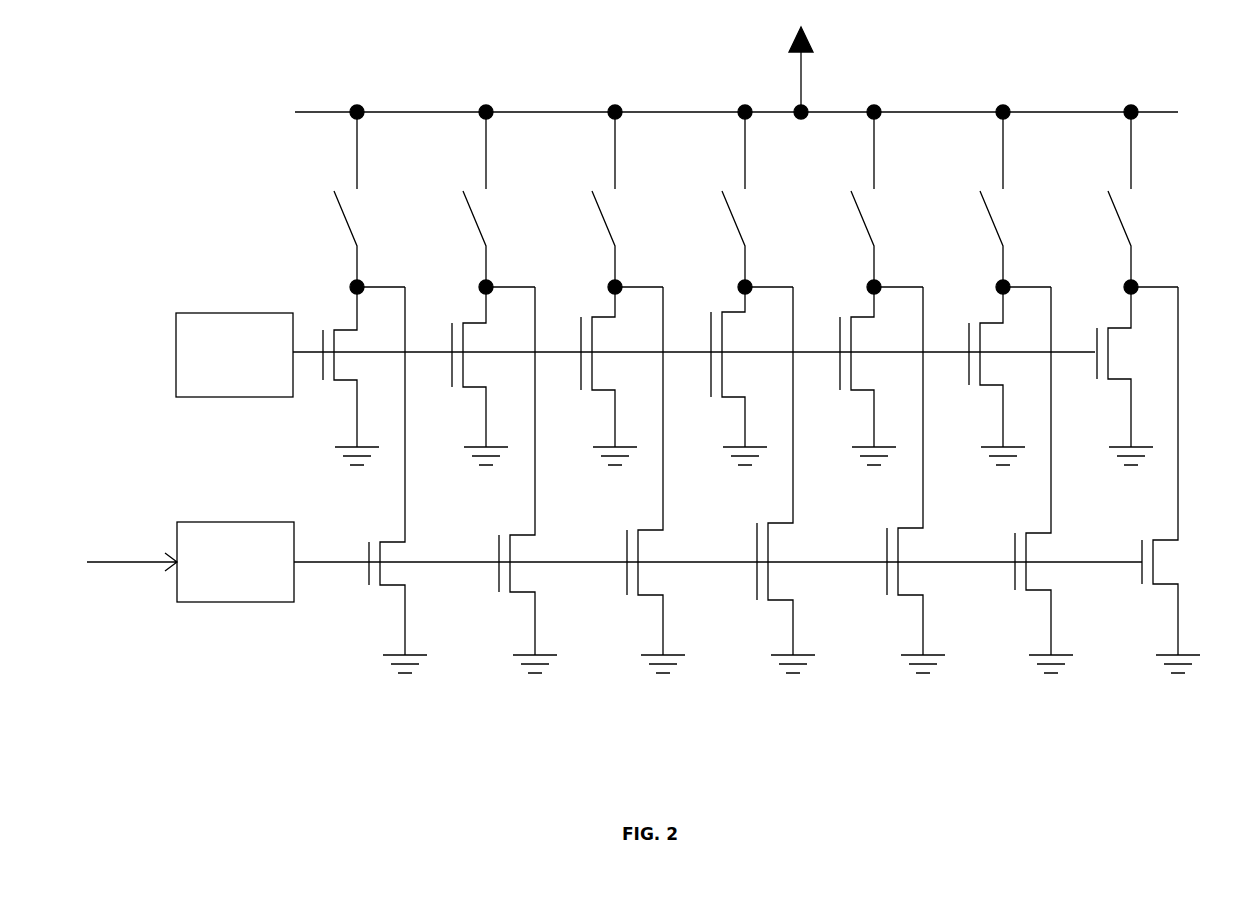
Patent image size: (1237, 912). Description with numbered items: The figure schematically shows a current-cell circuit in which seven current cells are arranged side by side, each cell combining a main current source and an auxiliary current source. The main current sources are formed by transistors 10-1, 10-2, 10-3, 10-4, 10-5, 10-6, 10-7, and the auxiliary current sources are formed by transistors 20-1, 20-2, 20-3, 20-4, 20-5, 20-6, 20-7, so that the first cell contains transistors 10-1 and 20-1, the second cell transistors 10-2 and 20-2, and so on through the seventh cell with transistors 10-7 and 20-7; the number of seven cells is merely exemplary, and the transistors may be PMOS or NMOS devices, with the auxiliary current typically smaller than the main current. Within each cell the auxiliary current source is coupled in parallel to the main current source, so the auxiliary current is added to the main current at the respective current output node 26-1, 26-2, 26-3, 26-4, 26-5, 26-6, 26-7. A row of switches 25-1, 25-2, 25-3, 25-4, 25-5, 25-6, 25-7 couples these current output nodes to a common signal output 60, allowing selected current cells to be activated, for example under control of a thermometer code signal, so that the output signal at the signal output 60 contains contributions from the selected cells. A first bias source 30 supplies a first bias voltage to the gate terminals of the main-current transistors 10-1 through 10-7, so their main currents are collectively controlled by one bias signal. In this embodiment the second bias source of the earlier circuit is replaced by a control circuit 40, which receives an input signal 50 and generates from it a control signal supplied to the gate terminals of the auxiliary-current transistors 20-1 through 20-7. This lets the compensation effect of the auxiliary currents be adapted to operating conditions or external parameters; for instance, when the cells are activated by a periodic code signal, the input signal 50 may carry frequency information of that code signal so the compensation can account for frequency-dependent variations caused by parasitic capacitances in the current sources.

The signal output 60 is at (808, 77).
The first bias source 30 is at (247, 397).
The control circuit 40 is at (236, 602).
The input signal 50 is at (120, 565).
The switch 25-1 is at (350, 212).
The switch 25-2 is at (479, 212).
The switch 25-3 is at (608, 212).
The switch 25-4 is at (738, 212).
The switch 25-5 is at (867, 212).
The switch 25-6 is at (996, 212).
The switch 25-7 is at (1124, 212).
The current output node 26-1 is at (350, 283).
The current output node 26-2 is at (479, 283).
The current output node 26-3 is at (608, 283).
The current output node 26-4 is at (738, 283).
The current output node 26-5 is at (867, 283).
The current output node 26-6 is at (996, 283).
The current output node 26-7 is at (1124, 283).
The transistor of main current source 10-1 is at (342, 387).
The transistor of main current source 10-2 is at (471, 394).
The transistor of main current source 10-3 is at (600, 397).
The transistor of main current source 10-4 is at (730, 404).
The transistor of main current source 10-5 is at (859, 397).
The transistor of main current source 10-6 is at (988, 392).
The transistor of main current source 10-7 is at (1116, 386).
The transistor of auxiliary current source 20-1 is at (389, 593).
The transistor of auxiliary current source 20-2 is at (519, 600).
The transistor of auxiliary current source 20-3 is at (647, 603).
The transistor of auxiliary current source 20-4 is at (777, 608).
The transistor of auxiliary current source 20-5 is at (907, 603).
The transistor of auxiliary current source 20-6 is at (1035, 598).
The transistor of auxiliary current source 20-7 is at (1162, 592).